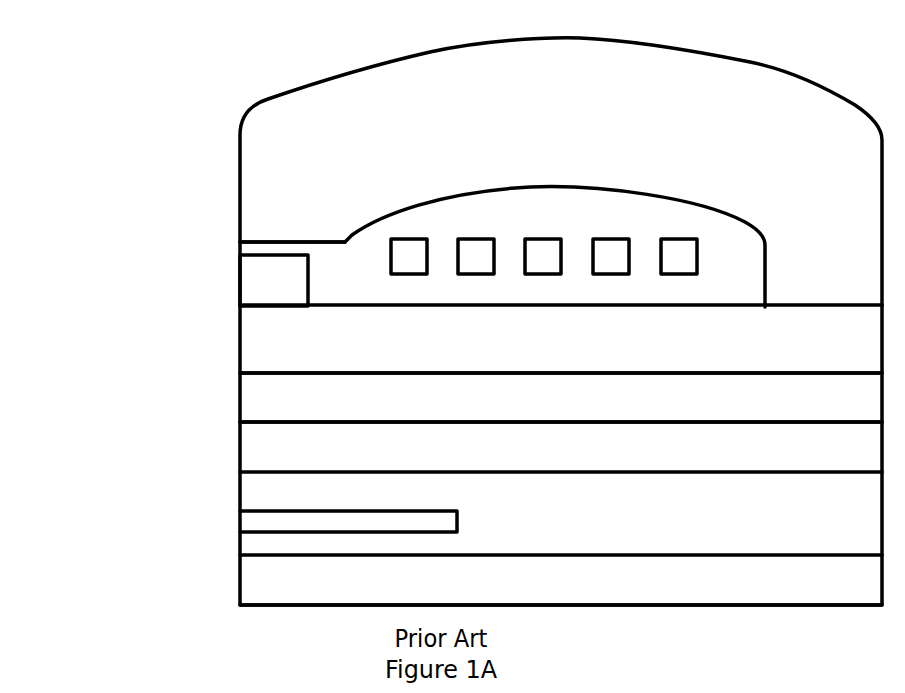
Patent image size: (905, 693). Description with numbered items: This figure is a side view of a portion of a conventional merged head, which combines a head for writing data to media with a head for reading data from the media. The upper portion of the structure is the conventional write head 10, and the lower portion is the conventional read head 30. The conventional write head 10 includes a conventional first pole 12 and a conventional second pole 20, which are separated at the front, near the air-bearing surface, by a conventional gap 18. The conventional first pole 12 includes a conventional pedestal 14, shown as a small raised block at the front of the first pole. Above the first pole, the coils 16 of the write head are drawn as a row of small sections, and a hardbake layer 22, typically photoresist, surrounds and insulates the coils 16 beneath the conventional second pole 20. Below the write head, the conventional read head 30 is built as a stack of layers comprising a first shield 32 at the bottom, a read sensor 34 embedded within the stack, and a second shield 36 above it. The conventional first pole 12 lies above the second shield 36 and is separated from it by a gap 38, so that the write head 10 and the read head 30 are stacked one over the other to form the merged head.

The conventional write head 10 is at (89, 37).
The conventional first pole (P1) 12 is at (155, 257).
The conventional pedestal 14 is at (217, 255).
The coils 16 is at (410, 239).
The conventional gap 18 is at (238, 247).
The conventional second pole (P2) 20 is at (238, 172).
The hardbake layer 22 is at (396, 212).
The conventional read head 30 is at (103, 422).
The first shield (S1) 32 is at (238, 575).
The read sensor 34 is at (238, 522).
The second shield 36 is at (238, 455).
The gap 38 is at (238, 387).